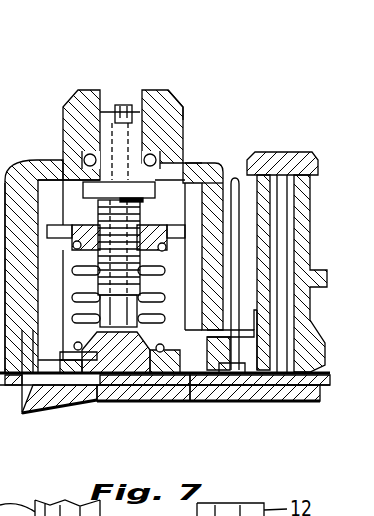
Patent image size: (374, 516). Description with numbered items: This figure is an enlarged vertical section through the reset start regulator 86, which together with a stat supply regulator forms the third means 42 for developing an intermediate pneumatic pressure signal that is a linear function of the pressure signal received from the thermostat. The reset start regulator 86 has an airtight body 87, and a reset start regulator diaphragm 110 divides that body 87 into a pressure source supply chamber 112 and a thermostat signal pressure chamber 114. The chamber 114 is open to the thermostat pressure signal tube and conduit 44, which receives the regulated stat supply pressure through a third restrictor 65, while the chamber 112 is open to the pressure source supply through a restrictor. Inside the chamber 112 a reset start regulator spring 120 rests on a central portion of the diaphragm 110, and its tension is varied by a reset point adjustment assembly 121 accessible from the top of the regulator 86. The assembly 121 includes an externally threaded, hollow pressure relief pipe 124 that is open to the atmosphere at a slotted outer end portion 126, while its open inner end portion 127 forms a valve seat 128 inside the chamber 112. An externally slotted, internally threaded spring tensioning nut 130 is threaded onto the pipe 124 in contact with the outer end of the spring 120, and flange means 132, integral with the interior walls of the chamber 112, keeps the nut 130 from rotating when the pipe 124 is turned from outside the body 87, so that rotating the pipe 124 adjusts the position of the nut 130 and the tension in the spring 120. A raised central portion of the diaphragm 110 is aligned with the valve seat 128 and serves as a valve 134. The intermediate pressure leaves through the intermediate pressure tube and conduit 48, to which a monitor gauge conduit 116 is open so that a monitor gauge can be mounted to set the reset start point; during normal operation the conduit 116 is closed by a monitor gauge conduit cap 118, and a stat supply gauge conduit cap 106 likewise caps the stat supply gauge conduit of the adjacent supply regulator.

The third means 42 is at (41, 78).
The pressure relief pipe 124 is at (104, 111).
The slotted outer end portion 126 is at (133, 111).
The open inner end portion 127 is at (140, 305).
The reset point adjustment assembly 121 is at (174, 97).
The airtight body 87 is at (44, 158).
The stat supply gauge conduit cap 106 is at (7, 178).
The reset start regulator 86 is at (190, 153).
The reset start regulator diaphragm 110 is at (33, 371).
The valve seat 128 is at (120, 322).
The valve 134 is at (100, 374).
The thermostat signal pressure chamber 114 is at (188, 399).
The pressure source supply chamber 112 is at (194, 152).
The spring tensioning nut 130 is at (204, 157).
The flange means 132 is at (214, 162).
The monitor gauge conduit cap 118 is at (252, 155).
The monitor gauge conduit 116 is at (284, 234).
The reset start regulator spring 120 is at (135, 310).
The thermostat pressure signal tube and conduit 44 is at (42, 406).
The intermediate pressure tube and conduit 48 is at (219, 402).
The third restrictor 65 is at (22, 413).